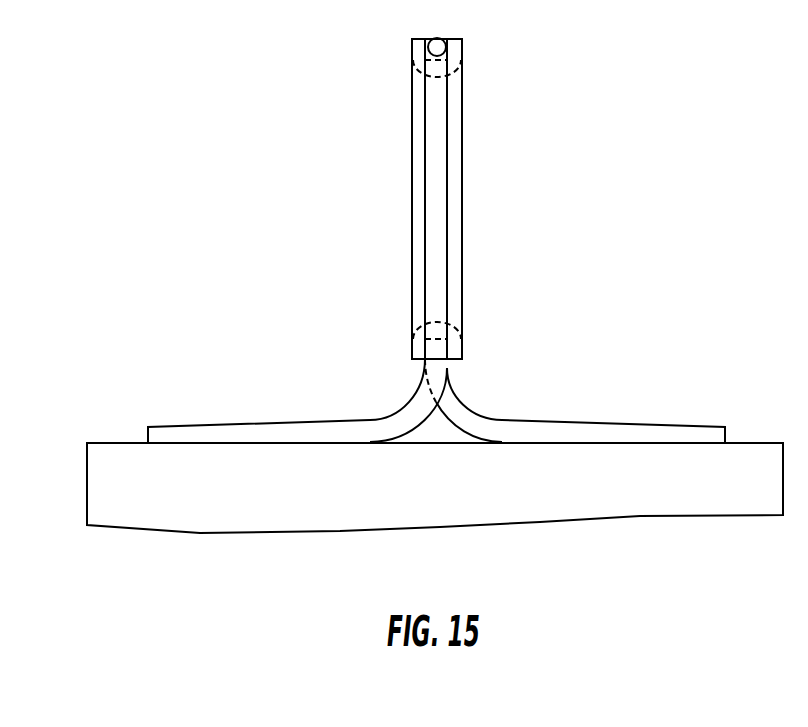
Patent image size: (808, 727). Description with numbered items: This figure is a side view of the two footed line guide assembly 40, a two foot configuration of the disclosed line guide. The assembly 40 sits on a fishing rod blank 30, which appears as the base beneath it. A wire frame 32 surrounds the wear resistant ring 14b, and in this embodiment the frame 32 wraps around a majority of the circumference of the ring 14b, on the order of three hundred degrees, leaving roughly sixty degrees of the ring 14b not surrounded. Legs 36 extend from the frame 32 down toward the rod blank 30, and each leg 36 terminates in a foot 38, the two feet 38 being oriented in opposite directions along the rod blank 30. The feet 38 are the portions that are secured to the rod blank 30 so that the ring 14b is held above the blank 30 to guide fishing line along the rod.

The rod blank 30 is at (130, 465).
The wear resistant ring 14b is at (412, 212).
The frame 32 is at (436, 36).
The legs 36 is at (440, 368).
The foot 38 is at (283, 420).
The two footed line guide assembly 40 is at (210, 185).